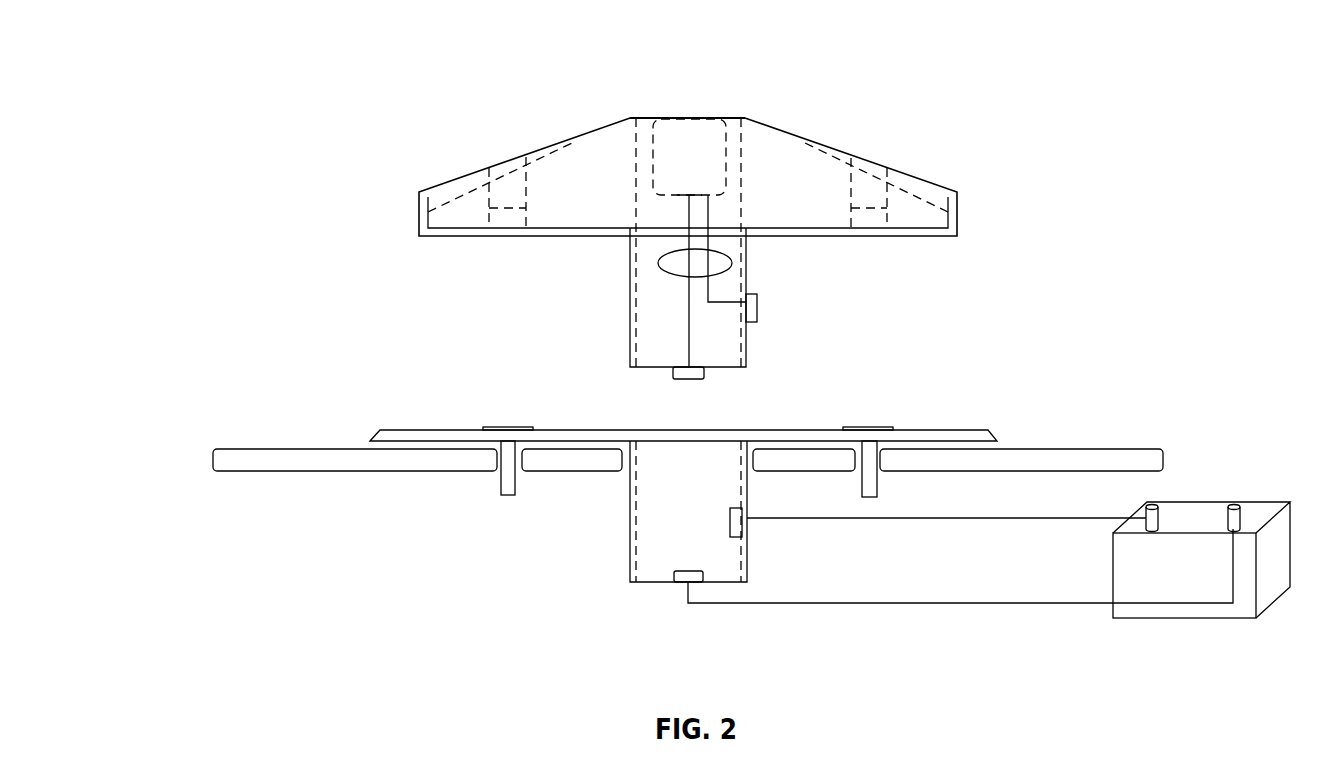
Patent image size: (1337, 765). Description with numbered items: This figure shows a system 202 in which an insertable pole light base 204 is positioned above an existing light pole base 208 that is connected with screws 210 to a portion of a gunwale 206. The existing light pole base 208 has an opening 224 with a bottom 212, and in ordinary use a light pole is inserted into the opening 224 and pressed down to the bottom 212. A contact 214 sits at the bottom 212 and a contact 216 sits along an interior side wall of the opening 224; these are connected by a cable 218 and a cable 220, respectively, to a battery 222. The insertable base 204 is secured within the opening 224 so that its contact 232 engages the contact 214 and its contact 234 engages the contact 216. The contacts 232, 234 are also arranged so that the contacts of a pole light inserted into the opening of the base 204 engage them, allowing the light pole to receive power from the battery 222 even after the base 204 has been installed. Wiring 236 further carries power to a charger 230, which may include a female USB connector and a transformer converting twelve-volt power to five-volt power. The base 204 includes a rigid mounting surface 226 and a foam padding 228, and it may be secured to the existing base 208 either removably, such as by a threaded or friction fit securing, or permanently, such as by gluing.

The system 202 is at (457, 90).
The insertable pole light base 204 is at (463, 277).
The gunwale 206 is at (363, 471).
The existing light pole base 208 is at (970, 430).
The screws 210 is at (503, 497).
The bottom 212 is at (642, 582).
The contact 214 is at (683, 583).
The contact 216 is at (742, 530).
The cable 218 is at (910, 603).
The cable 220 is at (955, 520).
The battery 222 is at (1208, 588).
The opening 224 is at (732, 430).
The rigid mounting surface 226 is at (968, 212).
The foam padding 228 is at (815, 209).
The charger 230 is at (710, 168).
The contact 232 is at (687, 380).
The contact 234 is at (757, 308).
The wiring 236 is at (660, 263).